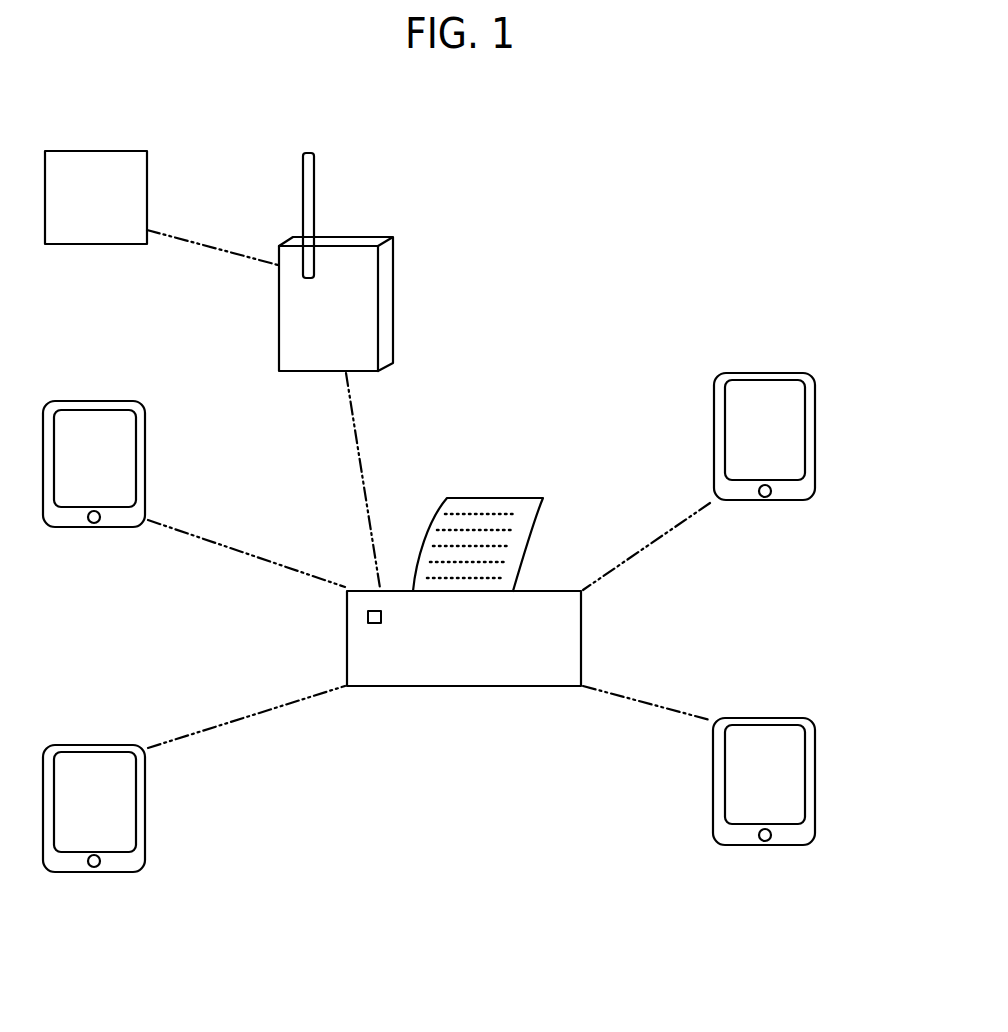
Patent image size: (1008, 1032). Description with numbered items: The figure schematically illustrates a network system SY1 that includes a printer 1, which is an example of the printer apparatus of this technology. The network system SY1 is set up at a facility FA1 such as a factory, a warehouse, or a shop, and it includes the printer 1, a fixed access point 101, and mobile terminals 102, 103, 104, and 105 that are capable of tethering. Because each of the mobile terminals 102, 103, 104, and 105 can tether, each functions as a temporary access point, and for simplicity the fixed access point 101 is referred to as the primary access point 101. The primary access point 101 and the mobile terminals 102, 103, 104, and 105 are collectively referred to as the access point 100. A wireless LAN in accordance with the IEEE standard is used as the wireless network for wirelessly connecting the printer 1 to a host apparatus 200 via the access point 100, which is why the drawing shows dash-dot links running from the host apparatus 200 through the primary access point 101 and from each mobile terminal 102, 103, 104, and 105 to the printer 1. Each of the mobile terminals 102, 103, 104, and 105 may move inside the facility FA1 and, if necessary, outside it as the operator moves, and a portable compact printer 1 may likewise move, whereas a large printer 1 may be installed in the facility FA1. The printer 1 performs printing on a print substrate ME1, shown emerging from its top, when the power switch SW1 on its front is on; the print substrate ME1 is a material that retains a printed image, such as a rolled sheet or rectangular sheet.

The printer 1 is at (481, 656).
The access point 100 is at (463, 512).
The fixed access point 101 is at (373, 235).
The mobile terminal 102 is at (106, 400).
The mobile terminal 103 is at (776, 373).
The mobile terminal 104 is at (104, 744).
The mobile terminal 105 is at (775, 718).
The host apparatus 200 is at (125, 213).
The network system SY1 is at (155, 119).
The power switch SW1 is at (368, 615).
The print substrate ME1 is at (498, 497).
The facility FA1 is at (683, 245).